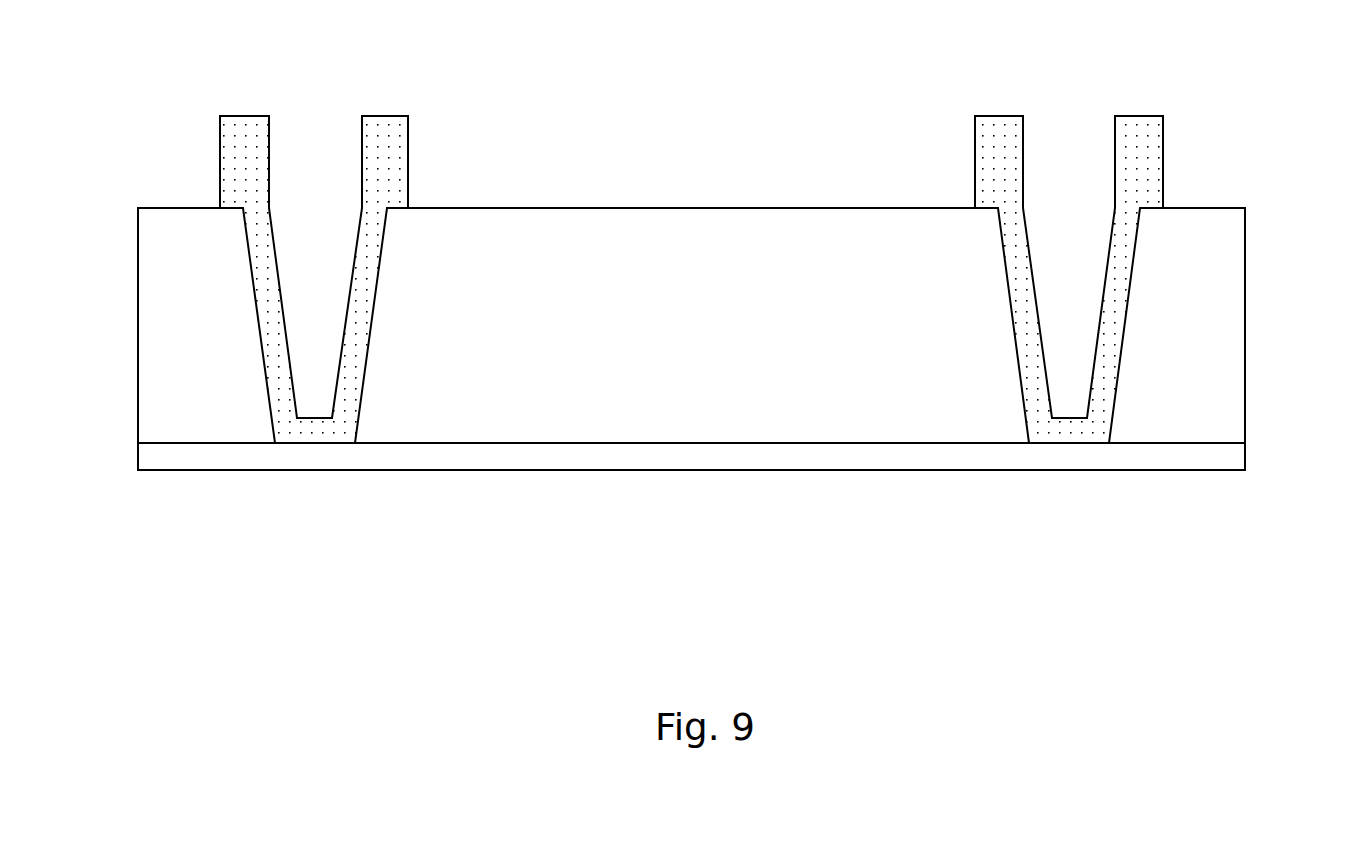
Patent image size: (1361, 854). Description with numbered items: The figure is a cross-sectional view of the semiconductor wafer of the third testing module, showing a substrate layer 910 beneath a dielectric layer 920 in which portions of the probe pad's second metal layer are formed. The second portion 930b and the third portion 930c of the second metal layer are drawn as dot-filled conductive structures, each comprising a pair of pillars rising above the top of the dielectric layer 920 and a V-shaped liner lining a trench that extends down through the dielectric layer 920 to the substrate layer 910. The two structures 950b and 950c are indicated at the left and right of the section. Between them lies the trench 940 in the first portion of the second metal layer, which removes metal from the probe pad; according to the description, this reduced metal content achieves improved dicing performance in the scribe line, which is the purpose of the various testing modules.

The substrate 910 is at (1238, 455).
The dielectric layer 920 is at (1238, 325).
The second portion 930b is at (400, 160).
The third portion 930c is at (1153, 158).
The trench 940 is at (697, 107).
The trench capacitor structure 950b is at (361, 241).
The trench capacitor structure 950c is at (1116, 241).